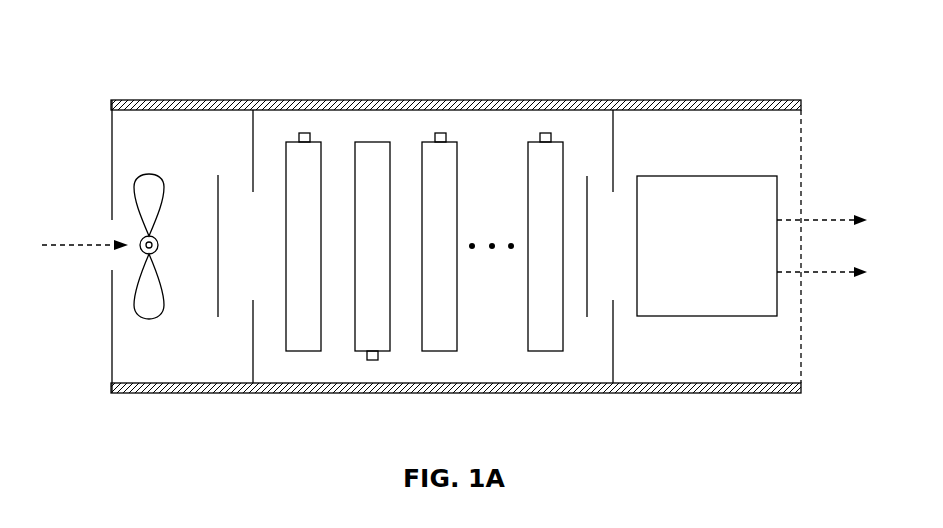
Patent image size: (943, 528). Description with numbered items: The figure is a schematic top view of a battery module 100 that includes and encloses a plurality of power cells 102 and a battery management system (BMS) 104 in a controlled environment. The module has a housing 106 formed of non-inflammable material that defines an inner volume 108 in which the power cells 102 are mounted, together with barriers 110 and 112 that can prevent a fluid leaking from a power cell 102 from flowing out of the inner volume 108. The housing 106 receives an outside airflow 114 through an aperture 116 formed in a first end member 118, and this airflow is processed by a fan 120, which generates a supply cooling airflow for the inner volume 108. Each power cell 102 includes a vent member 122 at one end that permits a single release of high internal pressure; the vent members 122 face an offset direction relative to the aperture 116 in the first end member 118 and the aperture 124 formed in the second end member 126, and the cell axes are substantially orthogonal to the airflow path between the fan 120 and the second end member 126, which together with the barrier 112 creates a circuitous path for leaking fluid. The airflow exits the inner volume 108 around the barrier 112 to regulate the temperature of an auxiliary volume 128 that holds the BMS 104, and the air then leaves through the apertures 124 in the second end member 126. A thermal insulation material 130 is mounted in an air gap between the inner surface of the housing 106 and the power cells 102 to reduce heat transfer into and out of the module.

The battery module 100 is at (130, 33).
The power cells 102 is at (305, 351).
The battery management system (BMS) 104 is at (730, 206).
The housing 106 is at (630, 100).
The inner volume 108 is at (331, 134).
The barrier 110 is at (218, 317).
The barrier 112 is at (588, 232).
The outside airflow 114 is at (88, 245).
The aperture 116 is at (111, 328).
The first end member 118 is at (111, 150).
The fan 120 is at (152, 175).
The vent member 122 is at (303, 133).
The aperture 124 is at (803, 137).
The second end member 126 is at (803, 363).
The auxiliary volume 128 is at (753, 134).
The thermal insulation material 130 is at (673, 100).